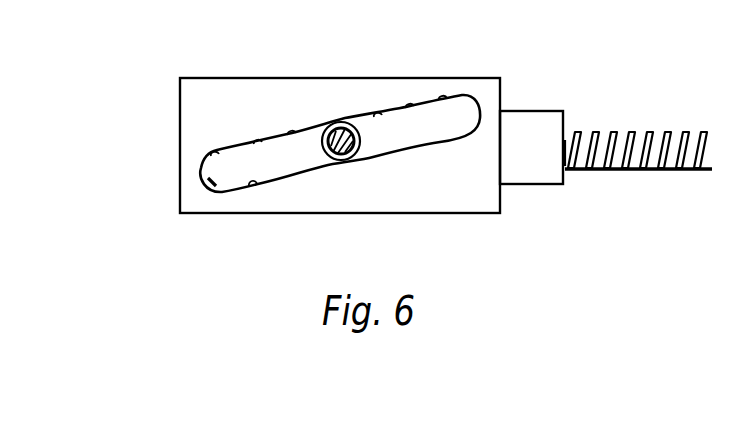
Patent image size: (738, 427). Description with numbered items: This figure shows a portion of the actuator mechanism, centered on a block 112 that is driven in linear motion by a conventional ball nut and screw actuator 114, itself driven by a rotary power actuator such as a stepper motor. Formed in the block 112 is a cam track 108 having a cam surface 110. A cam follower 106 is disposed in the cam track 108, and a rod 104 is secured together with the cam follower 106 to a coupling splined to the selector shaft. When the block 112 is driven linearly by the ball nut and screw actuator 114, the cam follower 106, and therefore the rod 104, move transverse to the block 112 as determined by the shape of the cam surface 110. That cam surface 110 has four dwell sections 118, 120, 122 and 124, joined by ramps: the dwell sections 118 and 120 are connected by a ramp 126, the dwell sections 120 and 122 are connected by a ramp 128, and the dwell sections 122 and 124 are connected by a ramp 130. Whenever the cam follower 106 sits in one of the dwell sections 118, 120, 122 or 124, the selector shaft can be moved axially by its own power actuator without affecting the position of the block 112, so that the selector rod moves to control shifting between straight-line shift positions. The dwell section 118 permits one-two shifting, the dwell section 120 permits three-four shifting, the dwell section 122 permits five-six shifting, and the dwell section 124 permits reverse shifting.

The rod 104 is at (347, 162).
The cam follower 106 is at (335, 160).
The cam track 108 is at (208, 177).
The cam surface 110 is at (248, 187).
The block 112 is at (190, 110).
The ball nut and screw actuator 114 is at (583, 121).
The dwell section 118 is at (218, 152).
The dwell section 120 is at (293, 133).
The dwell section 122 is at (378, 115).
The dwell section 124 is at (443, 99).
The ramp 126 is at (258, 142).
The ramp 128 is at (341, 121).
The ramp 130 is at (410, 106).